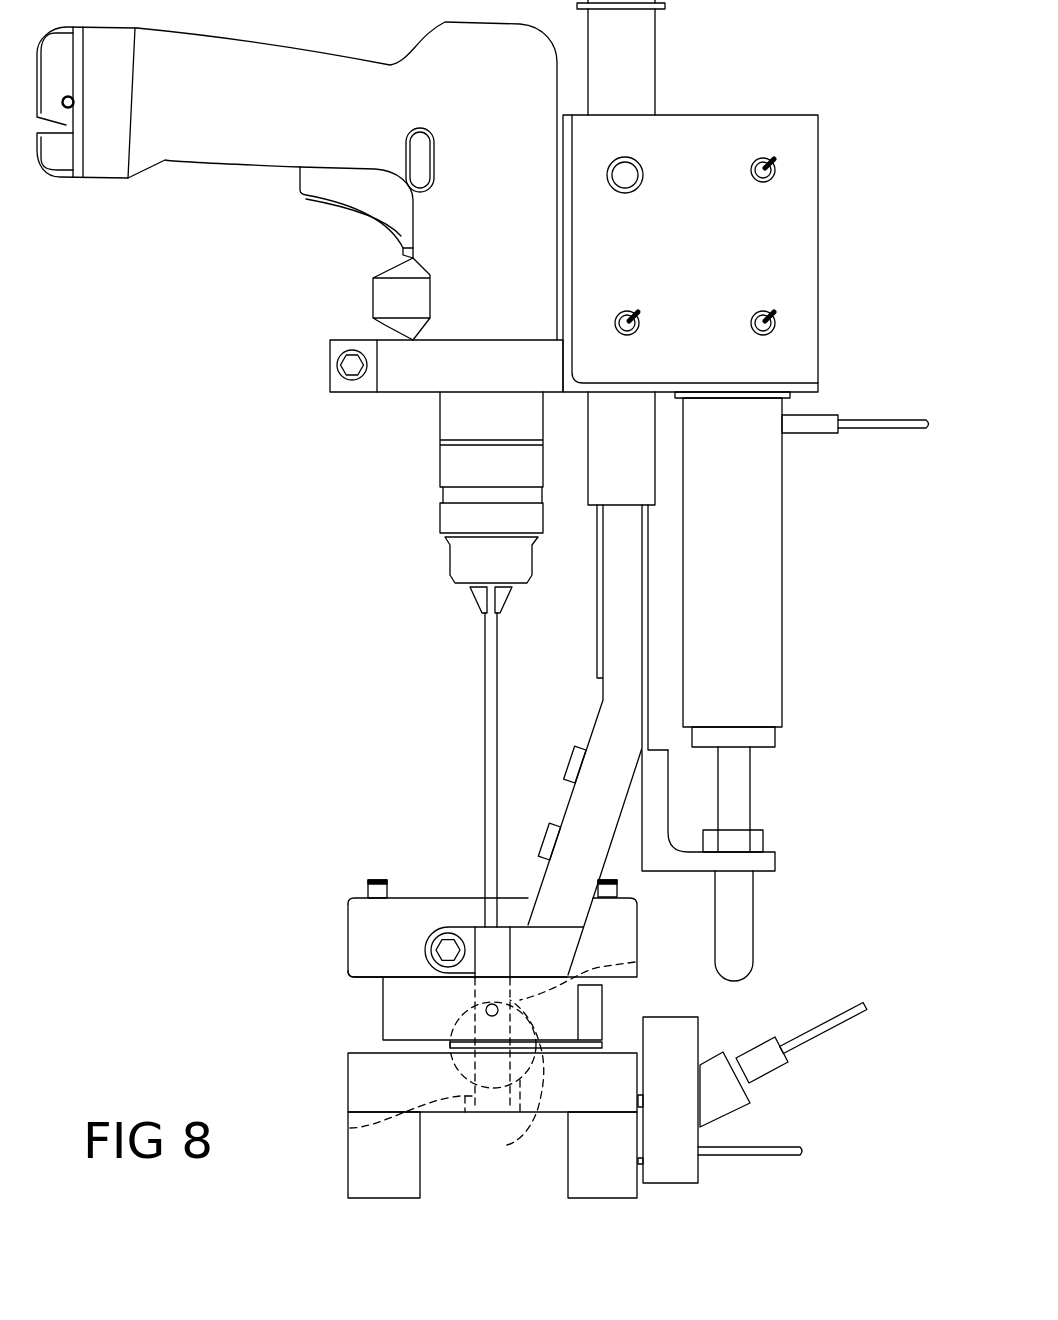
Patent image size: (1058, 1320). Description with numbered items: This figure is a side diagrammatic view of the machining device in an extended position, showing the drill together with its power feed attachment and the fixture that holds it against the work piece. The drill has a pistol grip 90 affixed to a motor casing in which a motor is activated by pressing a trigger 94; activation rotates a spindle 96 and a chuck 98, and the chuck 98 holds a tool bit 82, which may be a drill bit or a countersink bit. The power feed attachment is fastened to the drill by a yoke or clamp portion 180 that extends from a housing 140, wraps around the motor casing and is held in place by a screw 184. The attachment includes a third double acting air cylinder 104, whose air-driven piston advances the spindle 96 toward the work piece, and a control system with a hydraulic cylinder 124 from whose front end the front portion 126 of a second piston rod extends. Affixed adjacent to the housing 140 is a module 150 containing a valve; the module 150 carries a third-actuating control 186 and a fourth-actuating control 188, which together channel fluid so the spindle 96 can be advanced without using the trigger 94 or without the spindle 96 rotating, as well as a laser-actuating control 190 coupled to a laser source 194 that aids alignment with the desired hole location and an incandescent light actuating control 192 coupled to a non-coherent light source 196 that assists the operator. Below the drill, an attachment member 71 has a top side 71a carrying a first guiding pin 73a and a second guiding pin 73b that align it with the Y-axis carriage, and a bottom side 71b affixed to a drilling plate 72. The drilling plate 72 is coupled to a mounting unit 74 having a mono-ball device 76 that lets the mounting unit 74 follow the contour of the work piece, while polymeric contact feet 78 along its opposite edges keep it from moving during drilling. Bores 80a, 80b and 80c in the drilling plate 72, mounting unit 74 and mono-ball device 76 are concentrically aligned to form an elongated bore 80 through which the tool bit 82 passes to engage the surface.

The pistol grip 90 is at (217, 143).
The trigger 94 is at (363, 205).
The third double acting air cylinder 104 is at (638, 67).
The module 150 is at (803, 226).
The fourth-actuating control 188 is at (625, 172).
The third-actuating control 186 is at (770, 165).
The laser-actuating control 190 is at (637, 312).
The incandescent light actuating control 192 is at (773, 317).
The clamp portion 180 is at (415, 385).
The screw 184 is at (348, 365).
The spindle 96 is at (450, 443).
The chuck 98 is at (452, 522).
The tool bit 82 is at (492, 700).
The housing 140 is at (598, 472).
The hydraulic cylinder 124 is at (772, 565).
The front portion 126 is at (762, 737).
The first guiding pin 73a is at (378, 890).
The second guiding pin 73b is at (612, 888).
The attachment member 71 is at (438, 948).
The top side 71a is at (347, 890).
The bottom side 71b is at (373, 982).
The drilling plate 72 is at (405, 1020).
The mono-ball device 76 is at (450, 1046).
The mounting unit 74 is at (367, 1078).
The contact feet 78 is at (367, 1175).
The elongated bore 80 is at (582, 1045).
The bore 80a is at (635, 962).
The bore 80b is at (507, 1145).
The bore 80c is at (350, 1128).
The laser source 194 is at (720, 1105).
The light source 196 is at (705, 1170).